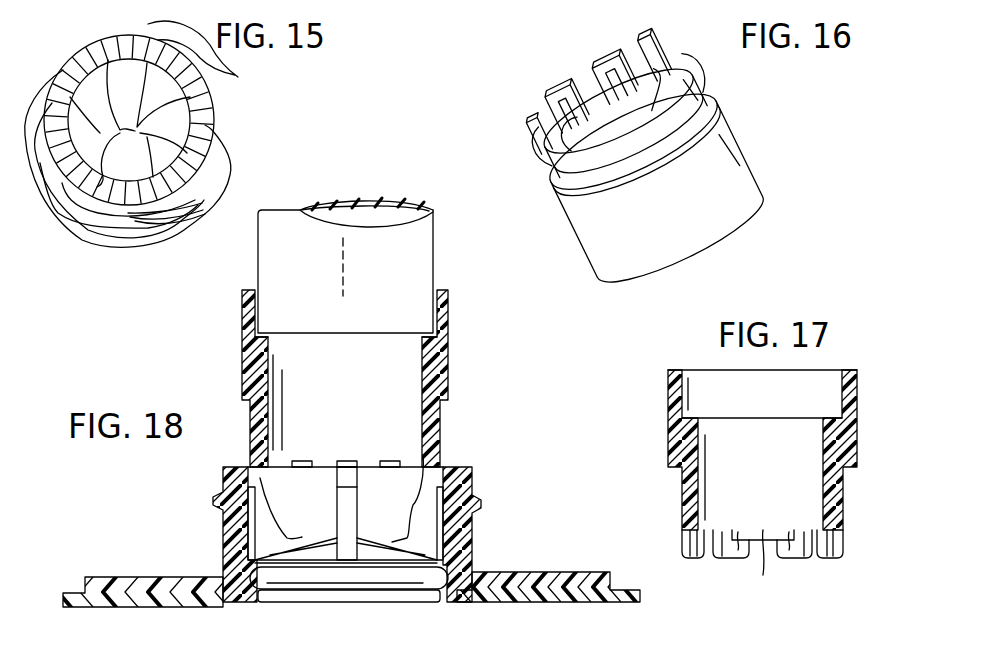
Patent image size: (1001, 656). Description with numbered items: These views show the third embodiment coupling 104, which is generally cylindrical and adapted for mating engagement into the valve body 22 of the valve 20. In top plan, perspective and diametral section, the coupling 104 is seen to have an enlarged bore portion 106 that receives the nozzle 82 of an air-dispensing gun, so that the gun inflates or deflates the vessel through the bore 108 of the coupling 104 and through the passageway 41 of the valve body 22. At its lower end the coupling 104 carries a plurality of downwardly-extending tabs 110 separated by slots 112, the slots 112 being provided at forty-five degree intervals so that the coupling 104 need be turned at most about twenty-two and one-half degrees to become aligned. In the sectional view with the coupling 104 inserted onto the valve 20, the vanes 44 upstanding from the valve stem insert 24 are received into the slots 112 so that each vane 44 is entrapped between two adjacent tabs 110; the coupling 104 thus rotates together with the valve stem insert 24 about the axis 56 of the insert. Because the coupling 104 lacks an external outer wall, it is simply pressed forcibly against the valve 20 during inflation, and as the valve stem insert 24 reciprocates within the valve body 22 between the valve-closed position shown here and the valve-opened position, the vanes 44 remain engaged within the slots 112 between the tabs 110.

In FIG. 18, the valve 20 is at (484, 523).
In FIG. 18, the valve body 22 is at (464, 545).
In FIG. 18, the valve stem insert 24 is at (350, 558).
In FIG. 18, the passageway 41 is at (438, 466).
In FIG. 18, the vanes 44 is at (400, 495).
In FIG. 18, the axis 56 is at (348, 268).
In FIG. 18, the nozzle 82 is at (420, 276).
In FIG. 15, the third embodiment coupling 104 is at (240, 123).
In FIG. 16, the third embodiment coupling 104 is at (750, 145).
In FIG. 18, the third embodiment coupling 104 is at (444, 357).
In FIG. 17, the enlarged bore portion 106 is at (707, 380).
In FIG. 18, the enlarged bore portion 106 is at (256, 298).
In FIG. 15, the bore 108 is at (126, 88).
In FIG. 17, the bore 108 is at (757, 438).
In FIG. 18, the bore 108 is at (347, 352).
In FIG. 15, the tabs 110 is at (130, 123).
In FIG. 16, the tabs 110 is at (604, 58).
In FIG. 17, the tabs 110 is at (843, 540).
In FIG. 15, the slots 112 is at (205, 193).
In FIG. 16, the slots 112 is at (592, 147).
In FIG. 17, the slots 112 is at (810, 560).
In FIG. 18, the slots 112 is at (432, 462).